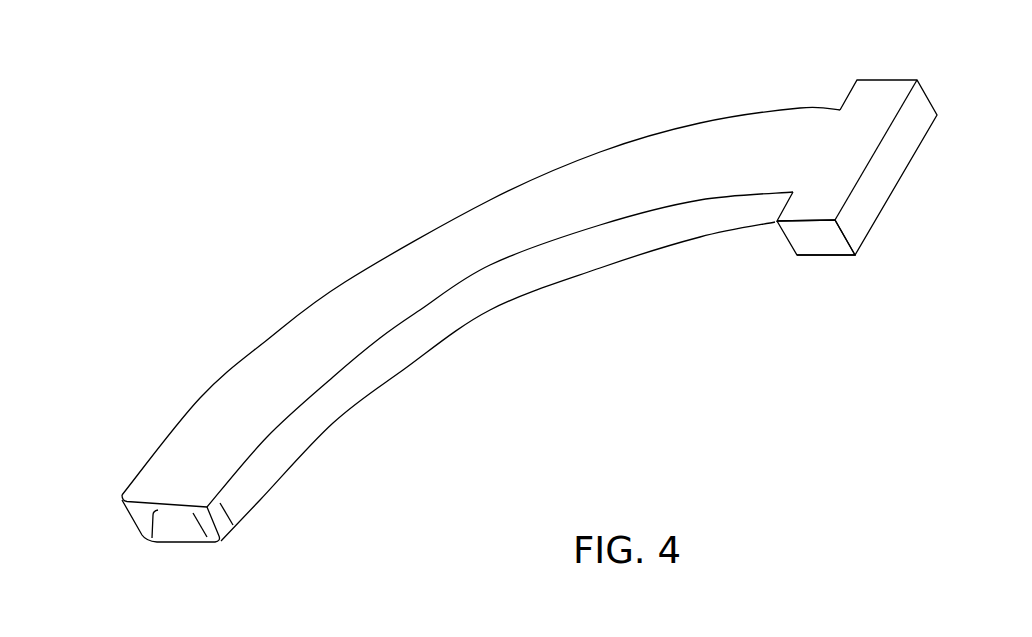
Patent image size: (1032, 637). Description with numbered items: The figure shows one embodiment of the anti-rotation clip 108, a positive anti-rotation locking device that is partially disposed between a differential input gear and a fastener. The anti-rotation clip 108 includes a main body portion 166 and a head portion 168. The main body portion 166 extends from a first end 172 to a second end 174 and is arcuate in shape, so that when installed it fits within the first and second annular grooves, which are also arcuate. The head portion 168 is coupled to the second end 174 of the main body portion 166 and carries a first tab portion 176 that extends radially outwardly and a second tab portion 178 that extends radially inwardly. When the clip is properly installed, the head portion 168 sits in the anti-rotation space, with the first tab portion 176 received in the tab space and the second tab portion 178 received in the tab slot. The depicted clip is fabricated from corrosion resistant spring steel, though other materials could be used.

The anti-rotation clip 108 is at (503, 116).
The main body portion 166 is at (371, 286).
The head portion 168 is at (924, 159).
The first end 172 is at (155, 542).
The second end 174 is at (818, 148).
The first tab portion 176 is at (892, 79).
The second tab portion 178 is at (812, 241).